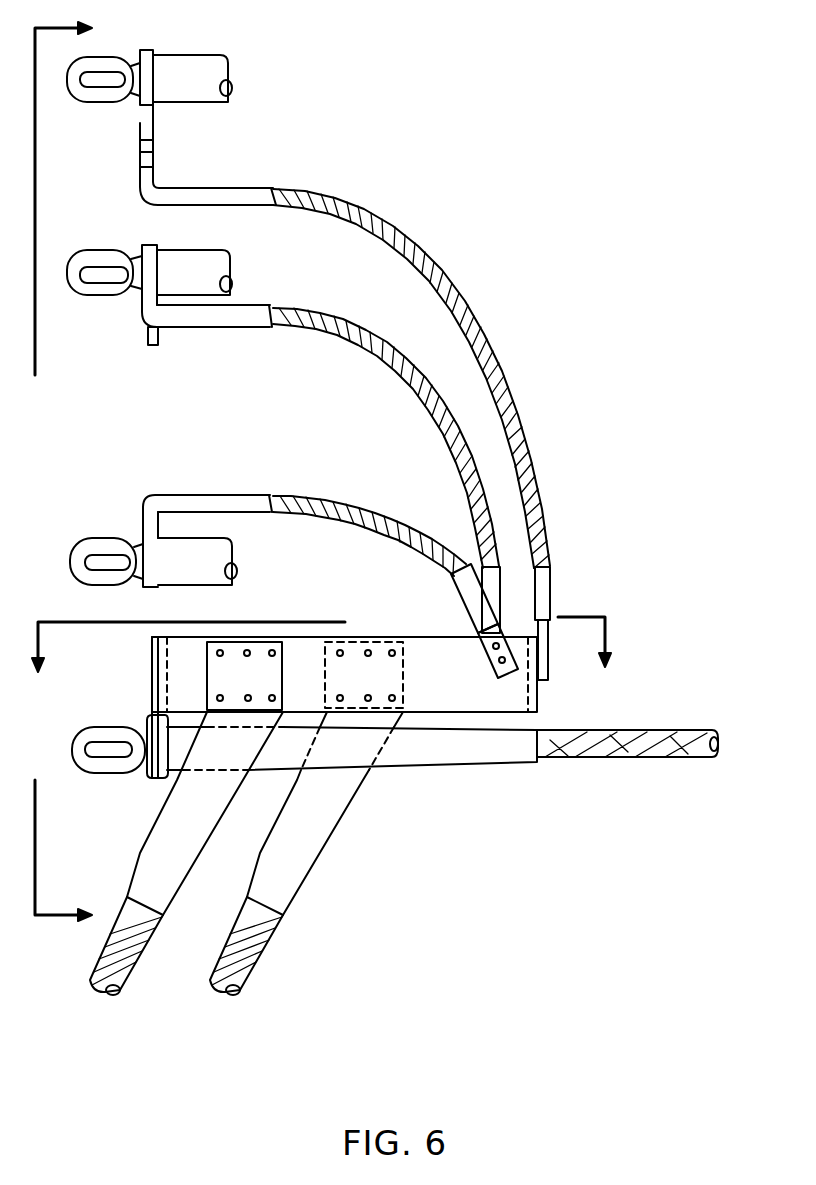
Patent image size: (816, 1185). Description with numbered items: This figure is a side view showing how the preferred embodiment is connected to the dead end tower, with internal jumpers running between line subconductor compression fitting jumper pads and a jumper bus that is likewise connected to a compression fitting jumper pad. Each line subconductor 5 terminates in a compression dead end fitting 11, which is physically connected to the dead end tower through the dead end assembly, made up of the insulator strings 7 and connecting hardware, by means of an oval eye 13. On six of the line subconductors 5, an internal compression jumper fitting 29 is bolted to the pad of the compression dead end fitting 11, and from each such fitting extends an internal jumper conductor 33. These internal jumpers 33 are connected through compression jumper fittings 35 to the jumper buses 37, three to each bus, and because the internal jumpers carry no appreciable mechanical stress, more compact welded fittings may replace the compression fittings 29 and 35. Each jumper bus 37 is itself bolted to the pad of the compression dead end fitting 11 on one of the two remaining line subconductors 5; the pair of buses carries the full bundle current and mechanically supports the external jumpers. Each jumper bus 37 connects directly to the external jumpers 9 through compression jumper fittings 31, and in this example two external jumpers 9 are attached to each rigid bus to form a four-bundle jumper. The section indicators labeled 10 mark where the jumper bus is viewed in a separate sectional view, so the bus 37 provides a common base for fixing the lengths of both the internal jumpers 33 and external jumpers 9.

The line subconductor 5 is at (613, 740).
The insulator string 7 is at (63, 480).
The external jumper subconductor 9 is at (130, 953).
The section line 10- 10 is at (325, 629).
The compression dead end fitting 11 is at (180, 85).
The oval eye 13 is at (103, 733).
The internal compression jumper fitting 29 is at (215, 200).
The compression jumper fitting 31 is at (318, 823).
The internal jumper conductor 33 is at (357, 218).
The compression jumper fitting 35 is at (465, 597).
The jumper bus 37 is at (432, 645).